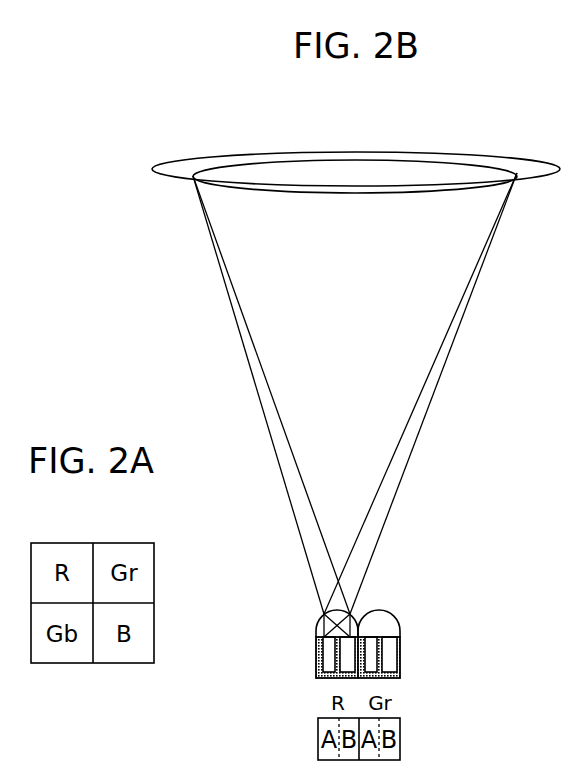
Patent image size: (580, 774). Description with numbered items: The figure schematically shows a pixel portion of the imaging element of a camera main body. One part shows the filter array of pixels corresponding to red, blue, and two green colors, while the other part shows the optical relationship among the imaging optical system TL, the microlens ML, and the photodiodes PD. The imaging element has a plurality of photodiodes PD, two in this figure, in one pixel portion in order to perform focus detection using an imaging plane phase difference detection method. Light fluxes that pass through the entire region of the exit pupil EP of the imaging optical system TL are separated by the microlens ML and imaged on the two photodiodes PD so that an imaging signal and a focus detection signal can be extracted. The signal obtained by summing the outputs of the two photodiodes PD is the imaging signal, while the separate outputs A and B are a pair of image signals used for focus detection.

The imaging optical system TL is at (172, 162).
The exit pupil EP is at (240, 162).
The microlens ML is at (400, 624).
The photodiode PD is at (327, 663).